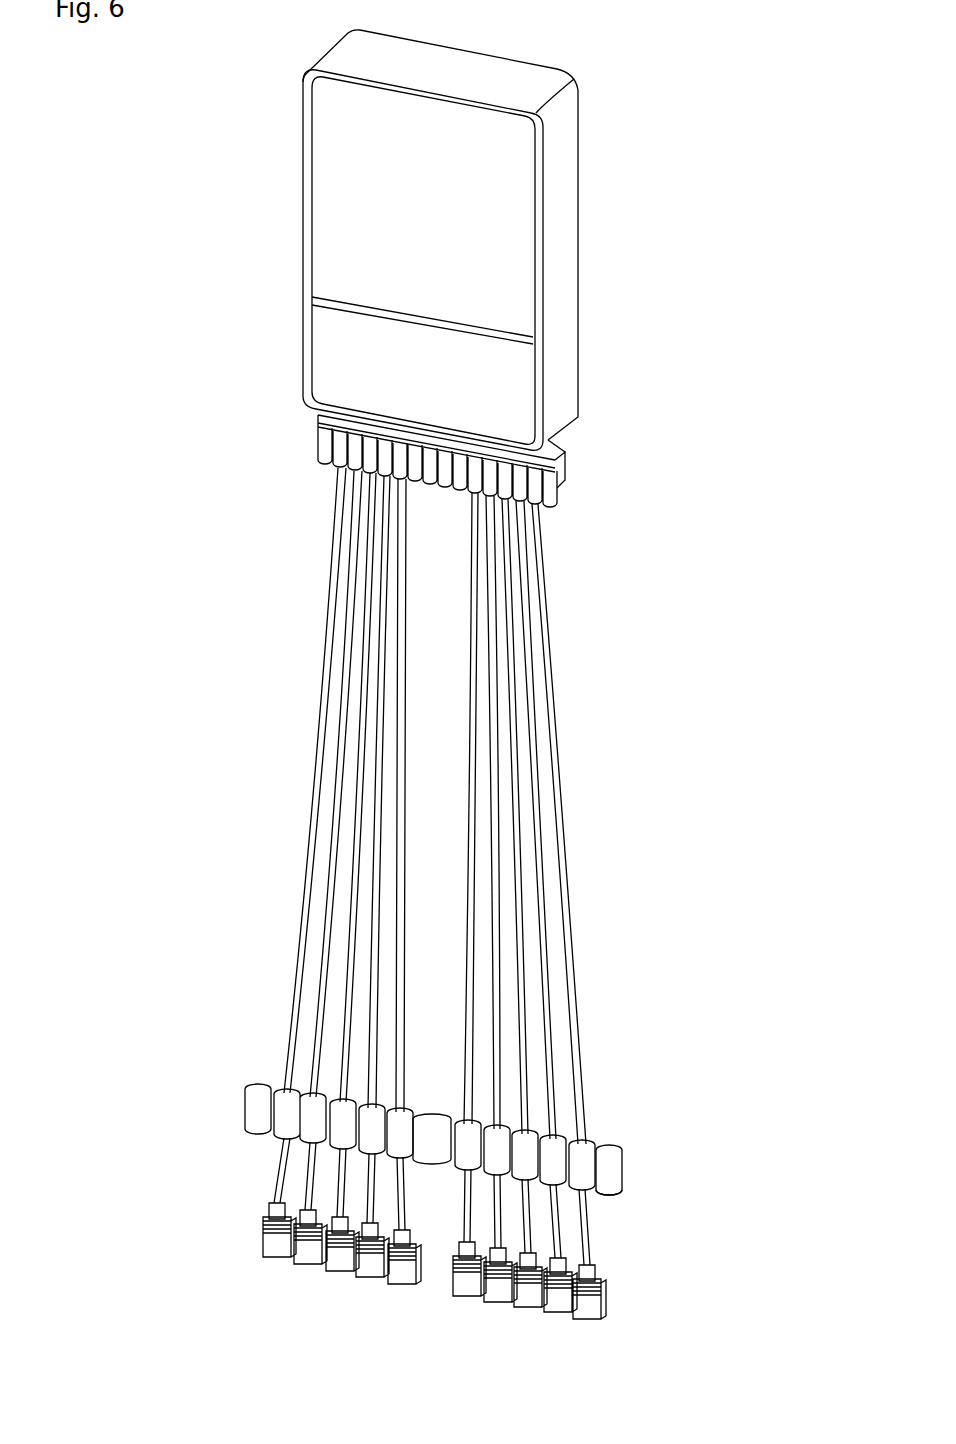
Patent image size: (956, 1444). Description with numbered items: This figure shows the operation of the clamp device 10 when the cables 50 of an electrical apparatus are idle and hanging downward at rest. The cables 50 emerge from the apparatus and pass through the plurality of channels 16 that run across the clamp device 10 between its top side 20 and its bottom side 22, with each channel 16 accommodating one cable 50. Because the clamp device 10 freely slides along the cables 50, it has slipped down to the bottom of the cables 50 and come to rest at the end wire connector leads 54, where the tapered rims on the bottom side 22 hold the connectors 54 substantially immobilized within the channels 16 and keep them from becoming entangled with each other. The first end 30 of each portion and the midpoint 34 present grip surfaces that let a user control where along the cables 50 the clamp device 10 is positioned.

The clamp device 10 is at (228, 1108).
The channel 16 is at (310, 1085).
The top side 20 is at (628, 1125).
The bottom side 22 is at (622, 1212).
The first end 30 is at (247, 1083).
The midpoint 34 is at (438, 1110).
The cable 50 is at (470, 745).
The end wire connector lead 54 is at (400, 1286).